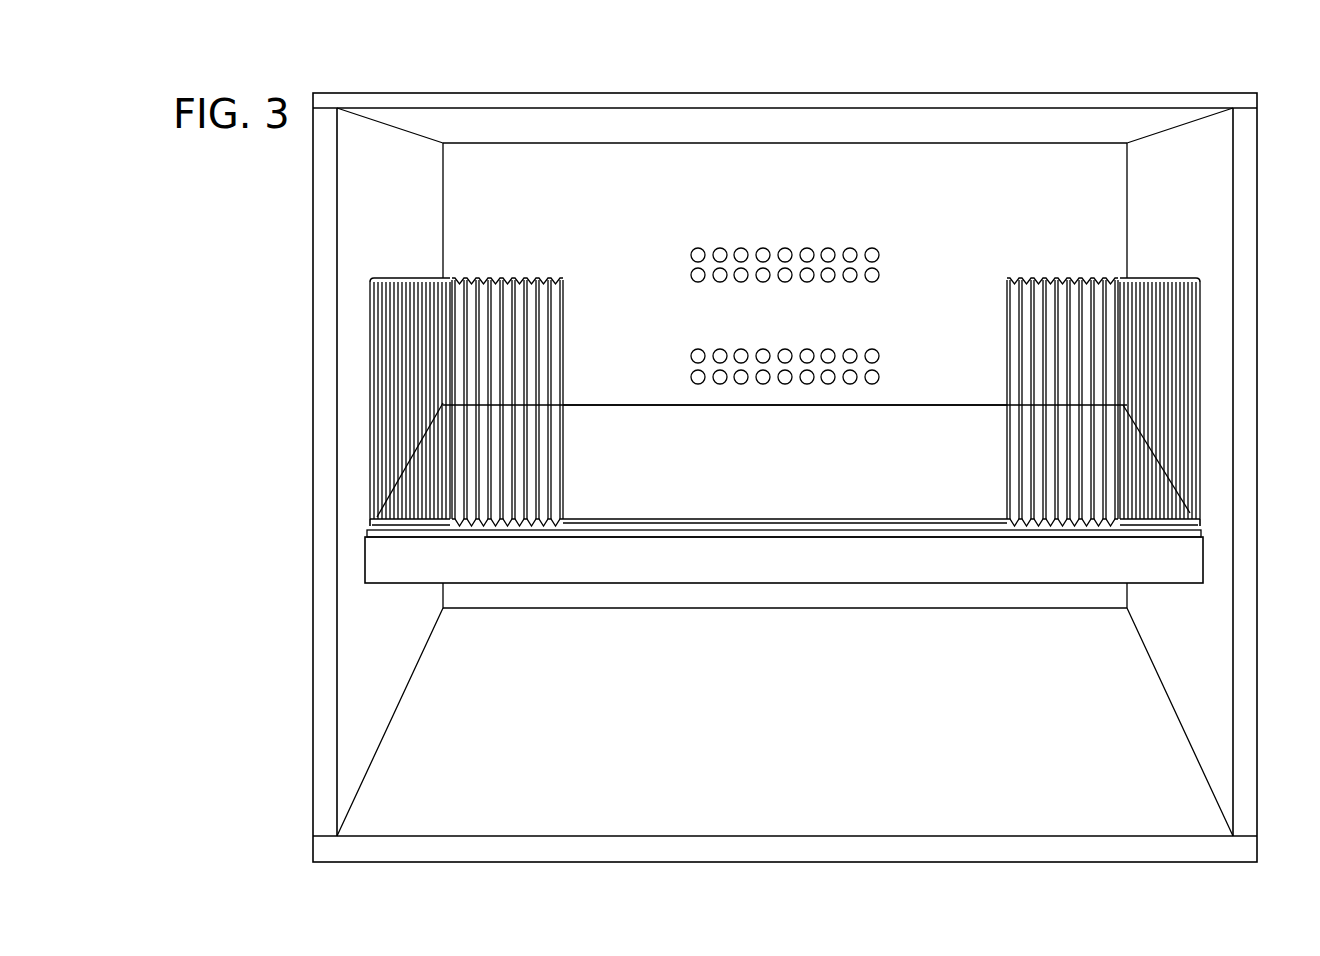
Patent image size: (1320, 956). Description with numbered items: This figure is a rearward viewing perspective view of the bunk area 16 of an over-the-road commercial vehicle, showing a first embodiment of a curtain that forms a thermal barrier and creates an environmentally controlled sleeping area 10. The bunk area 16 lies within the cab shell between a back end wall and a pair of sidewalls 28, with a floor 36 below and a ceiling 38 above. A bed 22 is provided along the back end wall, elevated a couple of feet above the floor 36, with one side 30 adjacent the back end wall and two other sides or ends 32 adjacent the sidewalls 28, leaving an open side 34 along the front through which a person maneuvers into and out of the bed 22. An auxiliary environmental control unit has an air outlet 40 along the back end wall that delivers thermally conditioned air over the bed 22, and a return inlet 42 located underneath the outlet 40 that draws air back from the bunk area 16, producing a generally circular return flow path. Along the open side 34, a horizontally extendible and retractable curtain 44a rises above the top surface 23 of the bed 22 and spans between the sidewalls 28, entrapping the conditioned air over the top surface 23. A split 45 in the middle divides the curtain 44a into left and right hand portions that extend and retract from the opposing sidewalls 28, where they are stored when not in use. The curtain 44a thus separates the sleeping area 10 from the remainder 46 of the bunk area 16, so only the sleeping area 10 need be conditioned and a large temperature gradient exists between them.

The environmentally controlled sleeping area 10 is at (523, 258).
The bunk area 16 is at (460, 722).
The bed 22 is at (938, 527).
The top surface 23 is at (862, 490).
The sidewalls 28 is at (323, 323).
The side 30 is at (963, 405).
The sides or ends 32 is at (390, 563).
The open side 34 is at (786, 537).
The floor 36 is at (805, 845).
The ceiling 38 is at (620, 103).
The air outlet 40 is at (763, 248).
The return inlet 42 is at (876, 351).
The horizontally extendible and retractable curtain 44a is at (417, 478).
The split 45 is at (1007, 462).
The remainder of the bunk area 46 is at (472, 655).